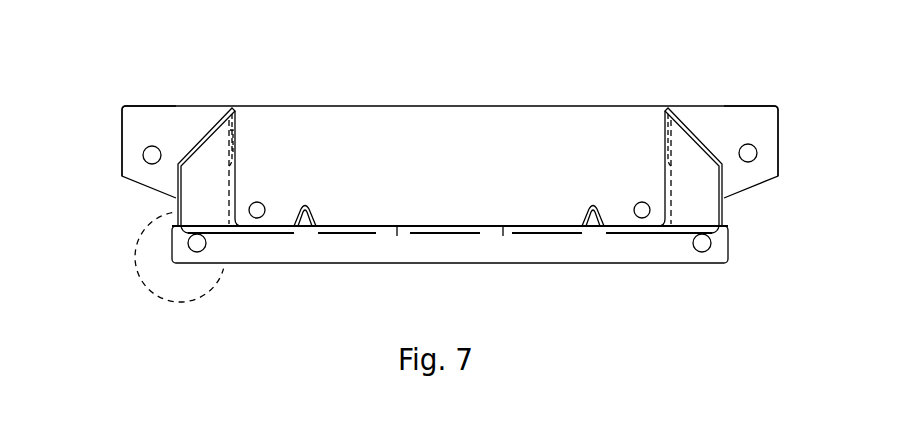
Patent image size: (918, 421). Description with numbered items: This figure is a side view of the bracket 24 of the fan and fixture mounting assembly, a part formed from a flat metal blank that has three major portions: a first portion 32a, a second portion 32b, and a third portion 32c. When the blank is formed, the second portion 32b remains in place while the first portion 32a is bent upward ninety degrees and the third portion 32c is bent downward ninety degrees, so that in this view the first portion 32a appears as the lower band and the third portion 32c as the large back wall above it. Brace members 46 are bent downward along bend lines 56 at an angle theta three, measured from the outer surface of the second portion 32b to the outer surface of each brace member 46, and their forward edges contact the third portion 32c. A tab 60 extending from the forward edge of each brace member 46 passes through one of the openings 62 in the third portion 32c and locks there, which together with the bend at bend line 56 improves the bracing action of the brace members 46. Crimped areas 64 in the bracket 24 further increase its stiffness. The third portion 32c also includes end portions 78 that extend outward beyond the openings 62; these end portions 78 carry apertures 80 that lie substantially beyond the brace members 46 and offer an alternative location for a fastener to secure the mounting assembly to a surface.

The bracket 24 is at (188, 70).
The first portion 32a is at (458, 258).
The second portion 32b is at (452, 232).
The third portion 32c is at (460, 170).
The brace members 46 is at (220, 178).
The bend line 56 is at (175, 225).
The tab 60 is at (236, 141).
The openings 62 is at (234, 123).
The crimped areas 64 is at (304, 219).
The end portions 78 is at (138, 123).
The apertures 80 is at (757, 153).